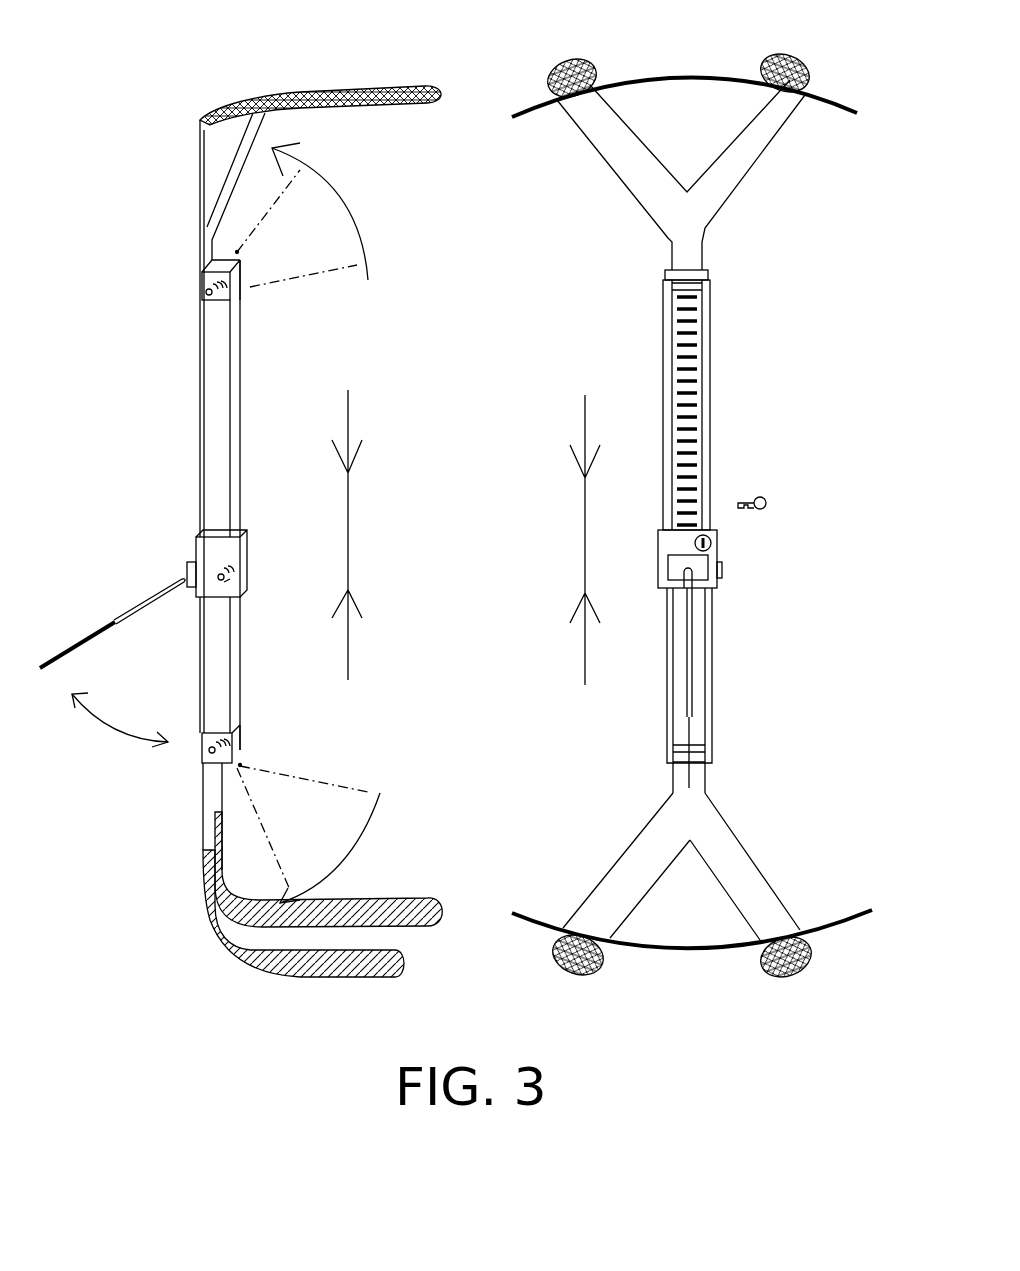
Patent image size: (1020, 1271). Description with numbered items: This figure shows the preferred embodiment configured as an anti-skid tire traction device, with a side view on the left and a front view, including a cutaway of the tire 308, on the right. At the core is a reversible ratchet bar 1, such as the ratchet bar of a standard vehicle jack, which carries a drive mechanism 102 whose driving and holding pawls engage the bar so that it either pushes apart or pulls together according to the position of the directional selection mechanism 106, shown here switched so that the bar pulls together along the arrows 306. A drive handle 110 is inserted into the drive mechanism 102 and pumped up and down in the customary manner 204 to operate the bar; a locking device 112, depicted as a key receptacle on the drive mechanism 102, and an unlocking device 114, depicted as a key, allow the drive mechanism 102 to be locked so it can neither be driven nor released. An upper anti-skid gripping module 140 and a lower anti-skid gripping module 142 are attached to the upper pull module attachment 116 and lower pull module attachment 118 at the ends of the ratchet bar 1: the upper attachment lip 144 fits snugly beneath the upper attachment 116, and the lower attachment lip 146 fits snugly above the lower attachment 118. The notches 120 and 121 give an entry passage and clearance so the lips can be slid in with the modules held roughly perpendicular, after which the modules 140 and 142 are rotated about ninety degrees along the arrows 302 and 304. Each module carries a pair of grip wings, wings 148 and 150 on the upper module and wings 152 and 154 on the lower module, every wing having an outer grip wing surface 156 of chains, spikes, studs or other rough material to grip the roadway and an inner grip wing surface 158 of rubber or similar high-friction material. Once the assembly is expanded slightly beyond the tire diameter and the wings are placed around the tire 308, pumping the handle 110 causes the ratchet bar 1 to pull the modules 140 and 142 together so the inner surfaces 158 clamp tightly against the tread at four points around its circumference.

The ratchet bar 1 is at (187, 465).
The drive mechanism 102 is at (230, 548).
The directional selection mechanism 106 is at (228, 572).
The drive handle 110 is at (113, 627).
The locking device 112 is at (712, 543).
The unlocking device 114 is at (768, 501).
The upper pull module attachment 116 is at (205, 290).
The lower pull module attachment 118 is at (205, 743).
The notch 120 is at (238, 270).
The notch 121 is at (240, 757).
The upper anti-skid tire gripping module 140 is at (288, 72).
The lower anti-skid tire gripping module 142 is at (262, 987).
The upper pull module attachment lip 144 is at (217, 300).
The lower pull module attachment lip 146 is at (238, 738).
The grip wing 148 is at (430, 92).
The grip wing 150 is at (368, 107).
The grip wing 152 is at (438, 903).
The grip wing 154 is at (400, 965).
The outer grip wing surface 156 is at (400, 88).
The inner grip wing surface 158 is at (362, 913).
The handle pumping motion 204 is at (113, 723).
The rotation arrow 302 is at (368, 250).
The rotation arrow 304 is at (378, 797).
The pull-together arrows 306 is at (585, 533).
The tire 308 is at (830, 108).